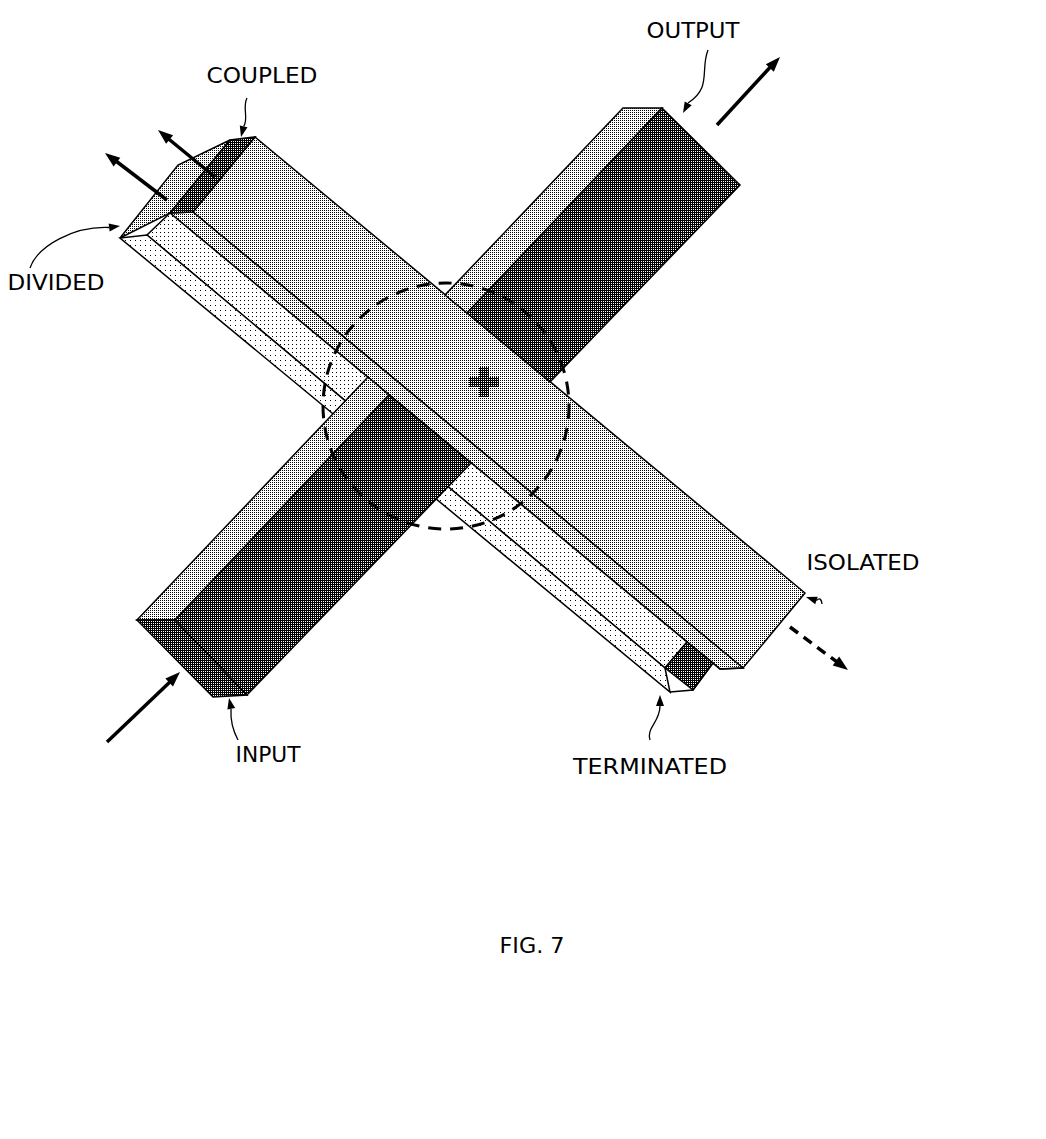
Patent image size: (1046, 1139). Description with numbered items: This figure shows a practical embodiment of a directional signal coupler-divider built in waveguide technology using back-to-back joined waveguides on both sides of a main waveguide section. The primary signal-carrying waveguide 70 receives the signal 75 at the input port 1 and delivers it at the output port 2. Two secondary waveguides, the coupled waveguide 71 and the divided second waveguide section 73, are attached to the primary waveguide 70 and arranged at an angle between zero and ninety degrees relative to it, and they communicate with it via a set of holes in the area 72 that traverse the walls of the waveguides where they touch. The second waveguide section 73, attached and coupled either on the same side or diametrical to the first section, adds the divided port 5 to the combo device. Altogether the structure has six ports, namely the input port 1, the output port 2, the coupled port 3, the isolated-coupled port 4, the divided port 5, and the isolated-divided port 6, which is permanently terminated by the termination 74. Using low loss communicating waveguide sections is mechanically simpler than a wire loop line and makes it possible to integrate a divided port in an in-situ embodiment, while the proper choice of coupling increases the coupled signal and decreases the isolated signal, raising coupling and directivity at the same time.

The primary signal-carrying waveguide 70 is at (232, 528).
The secondary waveguide (coupled) 71 is at (363, 227).
The area of holes 72 is at (567, 388).
The second waveguide section (divided) 73 is at (532, 577).
The permanent termination 74 is at (660, 683).
The signal 75 is at (152, 706).
The input port 1 is at (185, 720).
The output port 2 is at (763, 155).
The coupled port 3 is at (160, 102).
The isolated-coupled port 4 is at (838, 612).
The divided port 5 is at (75, 152).
The isolated-divided port 6 is at (698, 713).